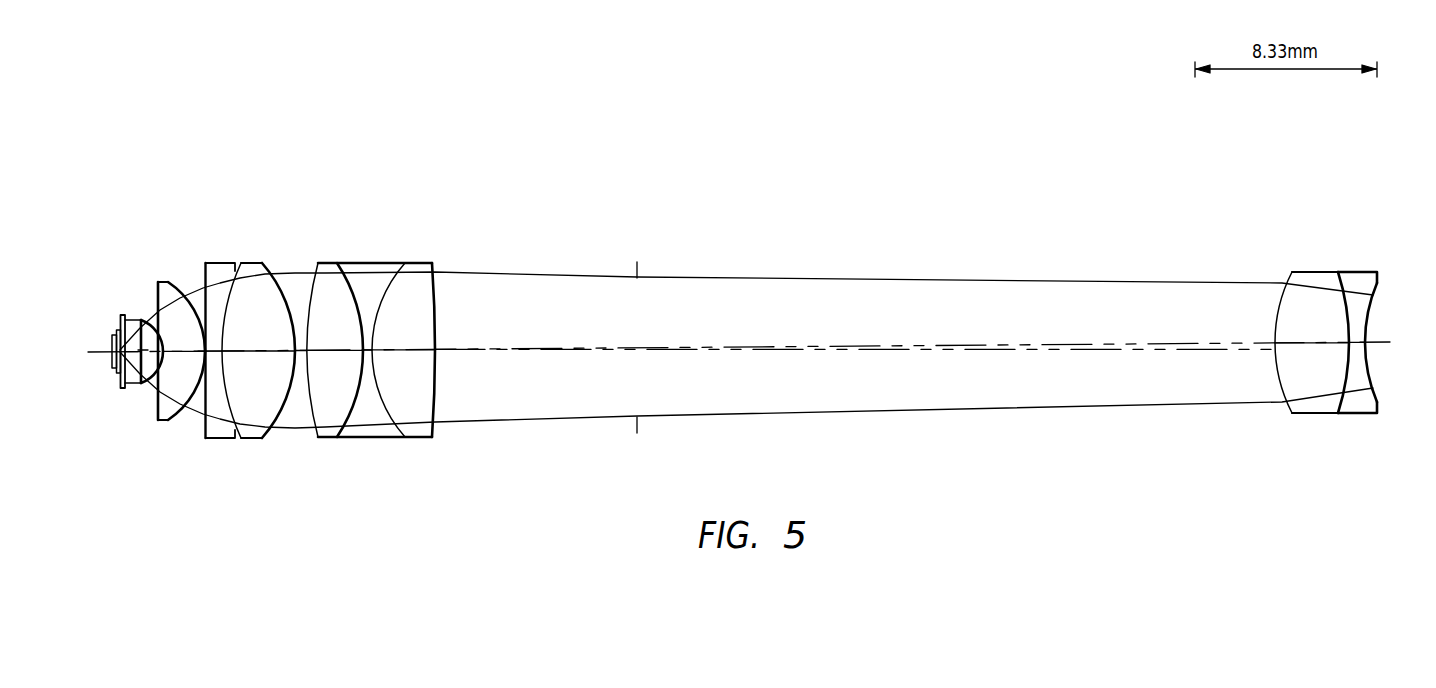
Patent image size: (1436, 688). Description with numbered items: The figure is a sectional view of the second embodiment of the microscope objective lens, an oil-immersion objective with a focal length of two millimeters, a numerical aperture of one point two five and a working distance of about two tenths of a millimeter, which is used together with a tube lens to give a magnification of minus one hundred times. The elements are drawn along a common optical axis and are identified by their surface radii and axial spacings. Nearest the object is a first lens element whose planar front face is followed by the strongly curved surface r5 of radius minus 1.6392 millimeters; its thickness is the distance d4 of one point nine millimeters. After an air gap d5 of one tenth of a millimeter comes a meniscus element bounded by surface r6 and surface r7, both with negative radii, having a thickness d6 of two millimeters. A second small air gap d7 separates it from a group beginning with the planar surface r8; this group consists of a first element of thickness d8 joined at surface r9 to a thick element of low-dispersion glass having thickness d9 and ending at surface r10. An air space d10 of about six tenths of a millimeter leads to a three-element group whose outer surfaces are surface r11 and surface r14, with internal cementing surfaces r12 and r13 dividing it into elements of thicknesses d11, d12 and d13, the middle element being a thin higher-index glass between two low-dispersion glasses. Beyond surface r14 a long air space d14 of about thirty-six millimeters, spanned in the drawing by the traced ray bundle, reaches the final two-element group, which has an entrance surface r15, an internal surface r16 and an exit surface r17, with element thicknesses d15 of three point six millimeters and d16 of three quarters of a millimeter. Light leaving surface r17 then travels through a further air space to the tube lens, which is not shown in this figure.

The distance d4 is at (138, 318).
The distance d5 is at (143, 350).
The distance d6 is at (184, 350).
The distance d7 is at (201, 335).
The distance d8 is at (212, 350).
The distance d9 is at (250, 348).
The distance d10 is at (300, 348).
The distance d11 is at (327, 348).
The distance d12 is at (372, 348).
The distance d13 is at (415, 348).
The distance d14 is at (725, 347).
The distance d15 is at (1310, 342).
The distance d16 is at (1353, 342).
The surface r5 is at (156, 382).
The surface r6 is at (158, 386).
The surface r7 is at (179, 414).
The surface r8 is at (205, 437).
The surface r9 is at (228, 396).
The surface r10 is at (279, 416).
The surface r11 is at (312, 407).
The surface r12 is at (355, 407).
The surface r13 is at (385, 392).
The surface r14 is at (436, 389).
The surface r15 is at (1275, 370).
The surface r16 is at (1345, 368).
The surface r17 is at (1370, 373).